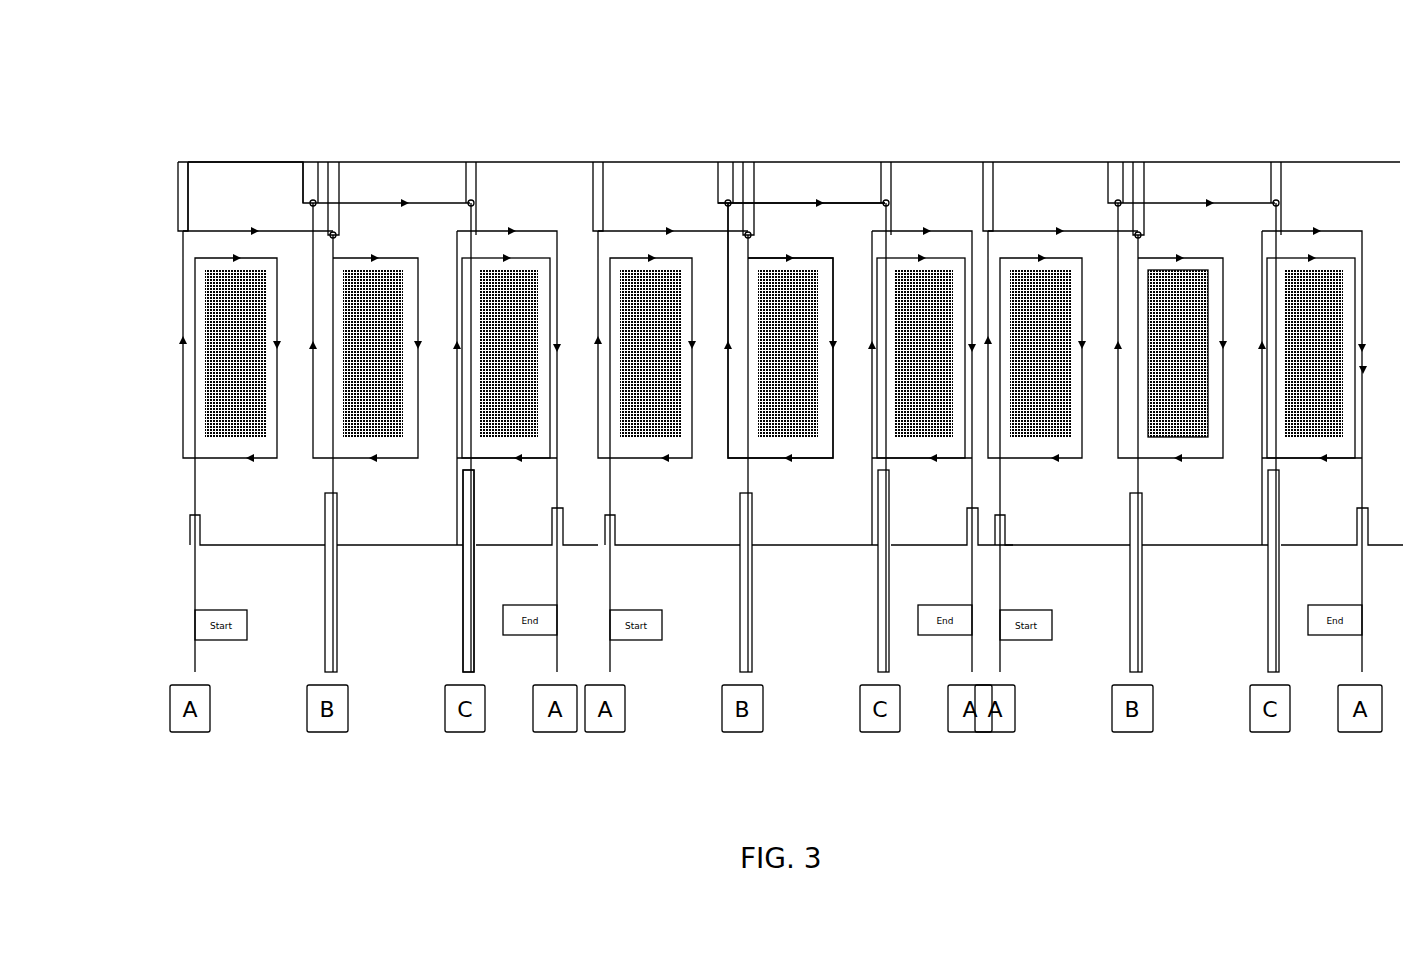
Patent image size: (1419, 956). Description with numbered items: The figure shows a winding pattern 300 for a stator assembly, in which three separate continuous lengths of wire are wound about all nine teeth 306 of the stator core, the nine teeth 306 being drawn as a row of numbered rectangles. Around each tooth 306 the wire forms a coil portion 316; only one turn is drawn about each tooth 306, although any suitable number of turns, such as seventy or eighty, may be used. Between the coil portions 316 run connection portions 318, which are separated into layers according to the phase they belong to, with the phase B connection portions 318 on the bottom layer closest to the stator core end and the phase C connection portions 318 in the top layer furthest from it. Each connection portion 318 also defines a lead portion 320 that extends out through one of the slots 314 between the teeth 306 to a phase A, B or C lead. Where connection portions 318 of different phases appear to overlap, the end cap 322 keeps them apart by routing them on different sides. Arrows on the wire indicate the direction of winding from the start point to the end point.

The winding pattern 300 is at (288, 52).
The tooth 306 is at (1188, 432).
The slot 314 is at (1104, 420).
The coil portion 316 is at (806, 462).
The connection portion 318 is at (843, 200).
The lead portion 320 is at (468, 572).
The end cap 322 is at (238, 202).